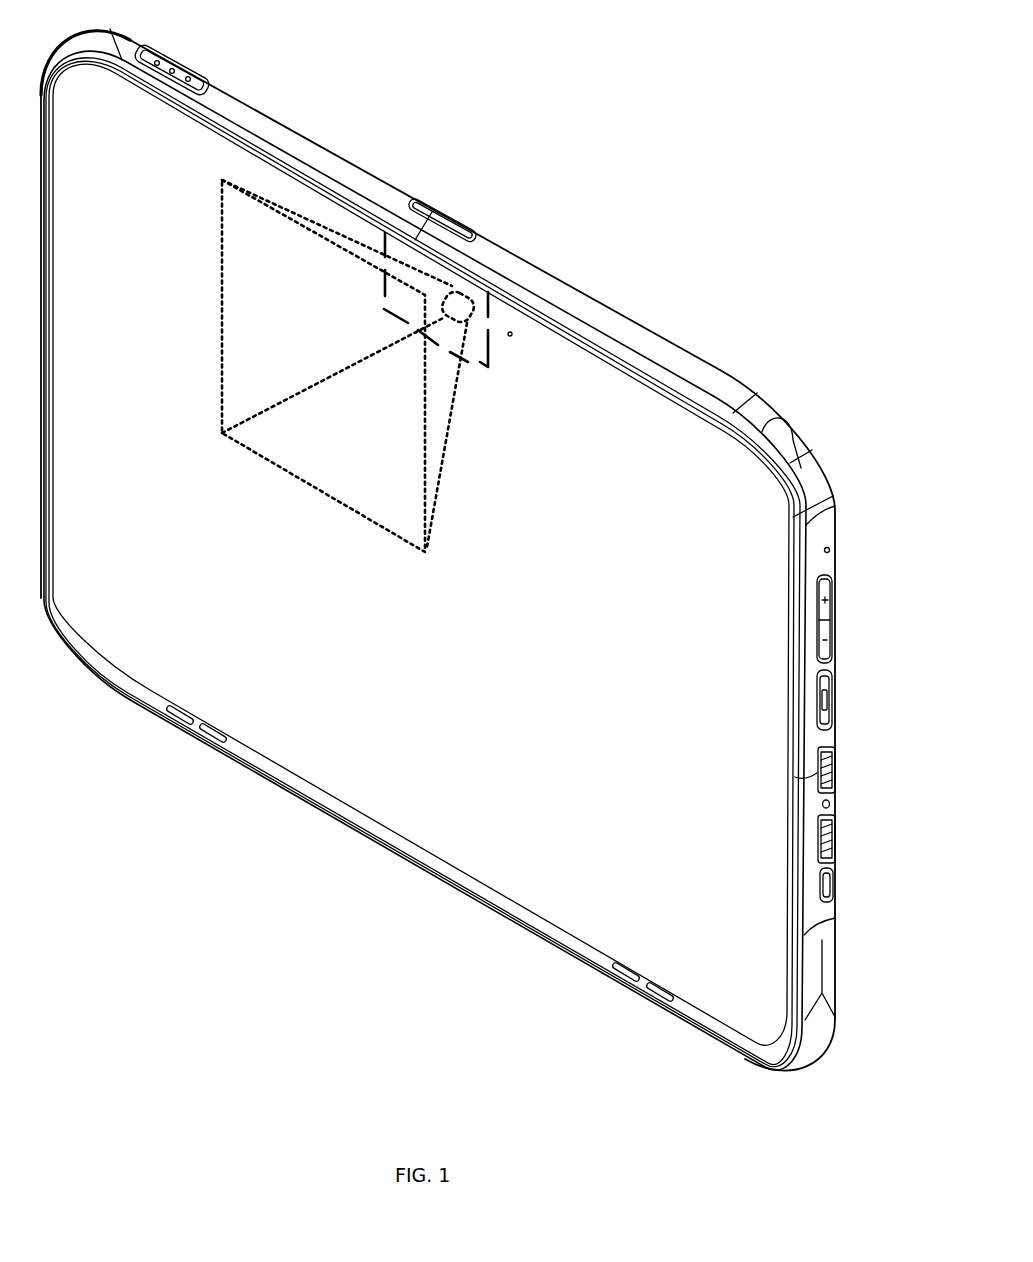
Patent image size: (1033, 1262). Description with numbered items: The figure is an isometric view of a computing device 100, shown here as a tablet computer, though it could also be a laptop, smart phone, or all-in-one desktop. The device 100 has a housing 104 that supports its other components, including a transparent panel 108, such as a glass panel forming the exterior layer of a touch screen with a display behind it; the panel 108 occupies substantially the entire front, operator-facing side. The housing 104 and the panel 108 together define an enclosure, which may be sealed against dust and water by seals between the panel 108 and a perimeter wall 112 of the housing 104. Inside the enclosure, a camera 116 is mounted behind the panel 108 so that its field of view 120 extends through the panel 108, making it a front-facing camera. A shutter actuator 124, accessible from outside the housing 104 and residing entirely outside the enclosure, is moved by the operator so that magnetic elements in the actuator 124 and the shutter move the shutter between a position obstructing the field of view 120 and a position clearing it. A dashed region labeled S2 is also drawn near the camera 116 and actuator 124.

The computing device 100 is at (469, 540).
The housing 104 is at (702, 348).
The transparent panel 108 is at (738, 594).
The perimeter wall 112 is at (313, 157).
The camera 116 is at (463, 293).
The field of view 120 is at (423, 487).
The shutter actuator 124 is at (452, 228).
The sensor region S2 is at (489, 343).